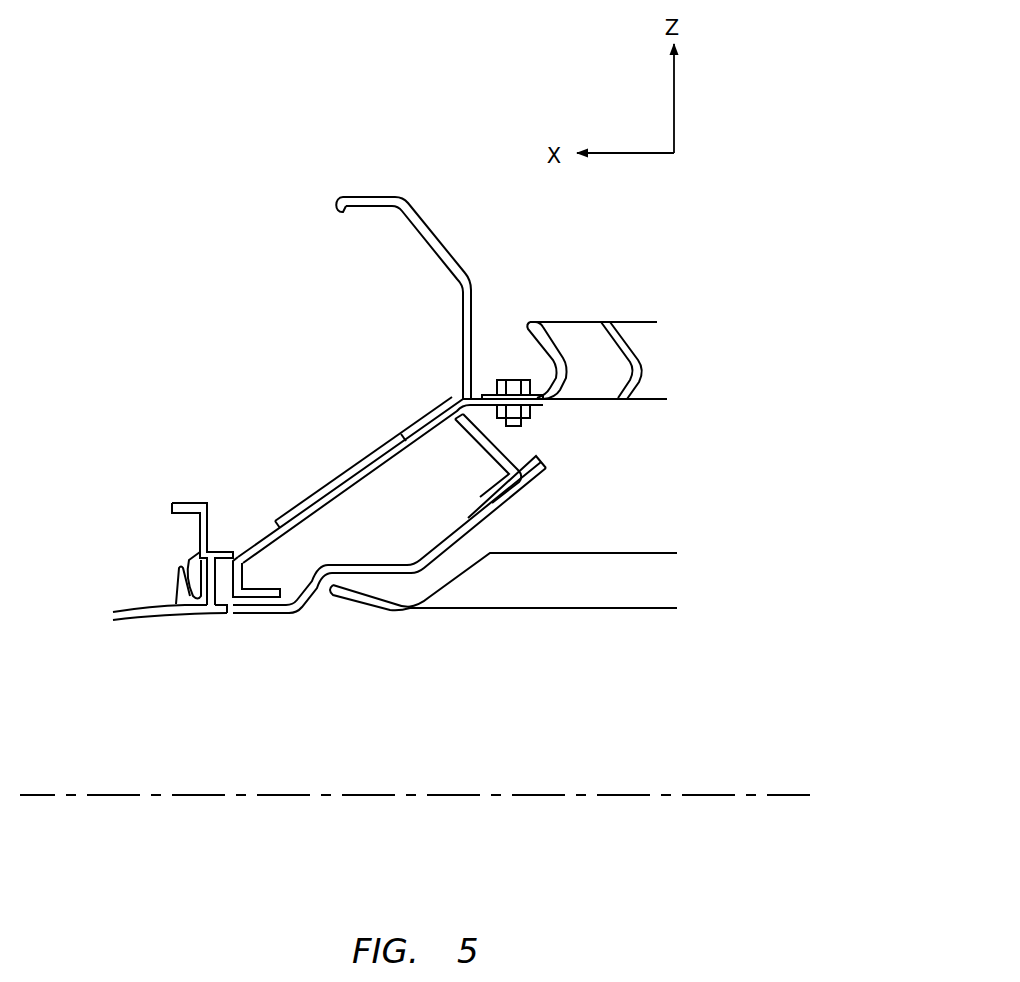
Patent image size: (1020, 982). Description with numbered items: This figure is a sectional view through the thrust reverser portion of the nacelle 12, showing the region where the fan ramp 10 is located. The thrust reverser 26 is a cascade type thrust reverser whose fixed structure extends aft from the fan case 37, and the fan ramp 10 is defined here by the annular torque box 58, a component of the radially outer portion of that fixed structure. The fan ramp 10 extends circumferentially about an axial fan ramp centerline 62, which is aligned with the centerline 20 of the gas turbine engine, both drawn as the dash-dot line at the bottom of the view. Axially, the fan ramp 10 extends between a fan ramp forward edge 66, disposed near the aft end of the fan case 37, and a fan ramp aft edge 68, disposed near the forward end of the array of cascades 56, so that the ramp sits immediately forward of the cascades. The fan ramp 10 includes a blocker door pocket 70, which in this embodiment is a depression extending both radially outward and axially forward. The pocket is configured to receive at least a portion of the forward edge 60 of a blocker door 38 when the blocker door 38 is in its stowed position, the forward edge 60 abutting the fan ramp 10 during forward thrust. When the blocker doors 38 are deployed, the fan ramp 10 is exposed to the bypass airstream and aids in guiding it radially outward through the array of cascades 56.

The fan ramp 10 is at (470, 530).
The nacelle 12 is at (99, 127).
The centerline 20 is at (608, 793).
The thrust reverser 26 is at (206, 177).
The fan case 37 is at (131, 607).
The blocker door 38 is at (560, 597).
The array of cascades 56 is at (570, 307).
The annular torque box 58 is at (311, 444).
The forward edge 60 is at (368, 616).
The fan ramp centerline 62 is at (692, 793).
The fan ramp forward edge 66 is at (563, 461).
The fan ramp aft edge 68 is at (232, 626).
The blocker door pocket 70 is at (314, 603).